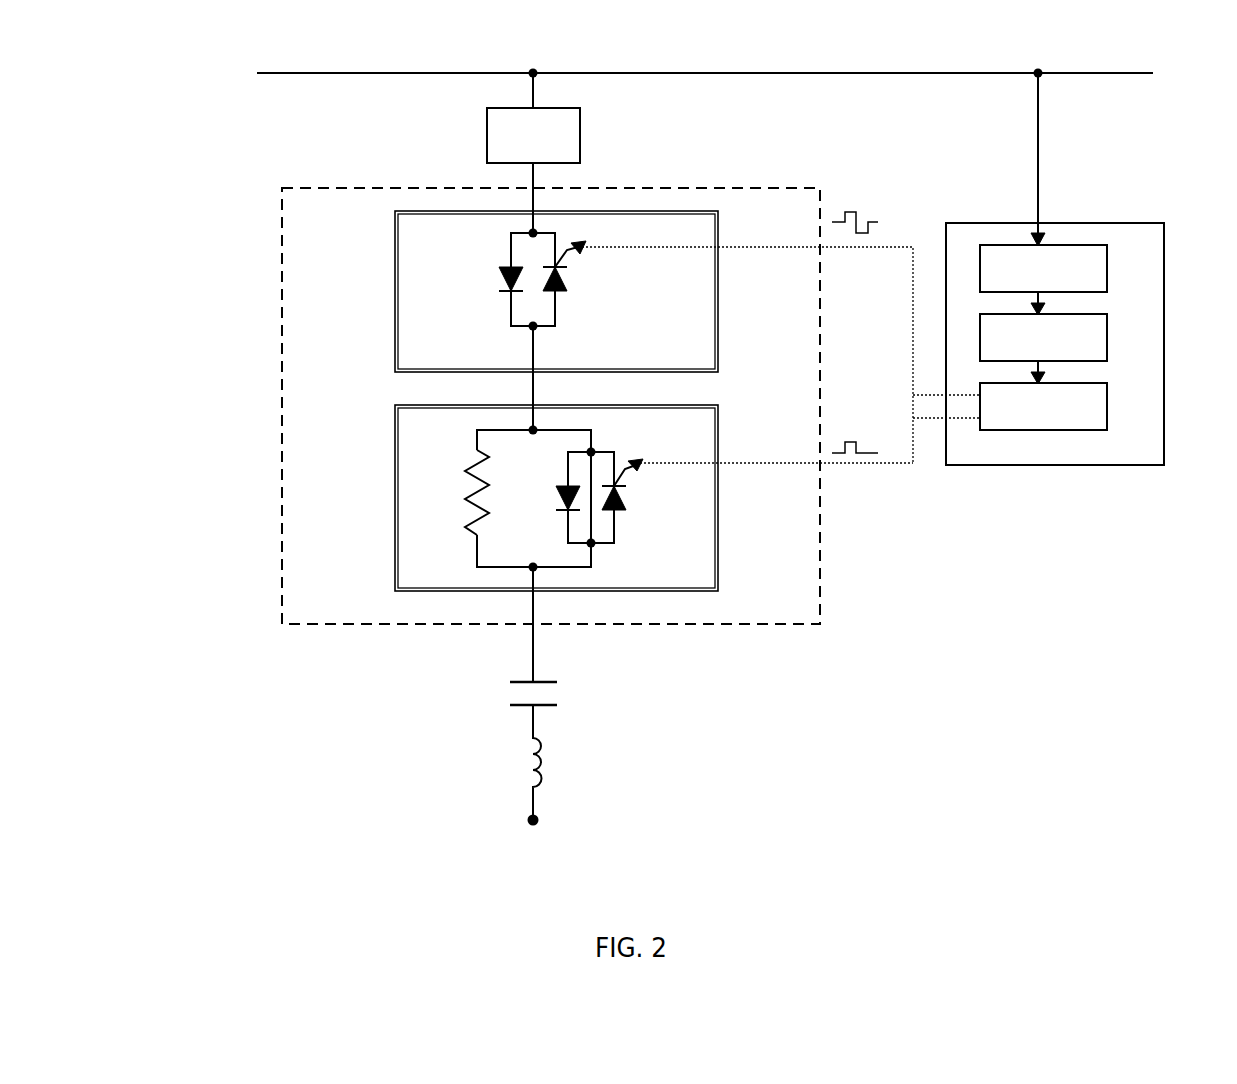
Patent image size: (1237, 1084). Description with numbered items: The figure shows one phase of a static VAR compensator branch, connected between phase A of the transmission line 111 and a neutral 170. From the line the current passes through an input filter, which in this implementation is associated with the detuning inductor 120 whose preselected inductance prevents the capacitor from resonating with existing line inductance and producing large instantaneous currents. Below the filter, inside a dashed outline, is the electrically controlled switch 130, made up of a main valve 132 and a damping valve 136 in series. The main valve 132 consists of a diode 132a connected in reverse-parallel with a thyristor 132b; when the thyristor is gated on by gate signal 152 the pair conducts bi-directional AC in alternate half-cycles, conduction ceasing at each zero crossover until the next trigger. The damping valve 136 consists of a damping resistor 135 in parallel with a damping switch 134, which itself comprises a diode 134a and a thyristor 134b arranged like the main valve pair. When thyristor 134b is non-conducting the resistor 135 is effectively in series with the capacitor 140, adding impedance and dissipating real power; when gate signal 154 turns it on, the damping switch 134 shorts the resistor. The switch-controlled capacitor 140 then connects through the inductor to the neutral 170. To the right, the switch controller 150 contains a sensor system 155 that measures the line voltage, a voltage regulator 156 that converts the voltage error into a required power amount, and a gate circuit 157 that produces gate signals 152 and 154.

The line 111 is at (272, 73).
The detuning inductor 120 is at (580, 137).
The electrically controlled switch 130 is at (820, 198).
The main valve 132 is at (519, 320).
The diode 132a is at (492, 281).
The thyristor 132b is at (580, 268).
The damping switch 134 is at (609, 517).
The diode 134a is at (549, 500).
The thyristor 134b is at (639, 486).
The damping resistor 135 is at (465, 497).
The damping valve 136 is at (513, 498).
The capacitor 140 is at (542, 682).
The switch controller 150 is at (878, 446).
The gate signal 152 is at (748, 247).
The gate signal 154 is at (748, 463).
The sensor system 155 is at (1107, 263).
The voltage regulator 156 is at (1107, 333).
The gate circuit 157 is at (1107, 402).
The neutral 170 is at (537, 823).